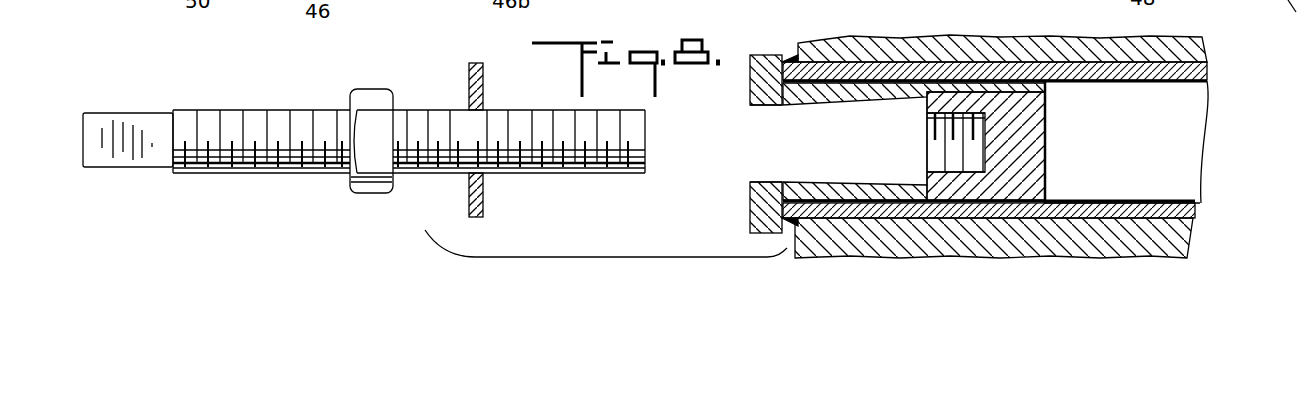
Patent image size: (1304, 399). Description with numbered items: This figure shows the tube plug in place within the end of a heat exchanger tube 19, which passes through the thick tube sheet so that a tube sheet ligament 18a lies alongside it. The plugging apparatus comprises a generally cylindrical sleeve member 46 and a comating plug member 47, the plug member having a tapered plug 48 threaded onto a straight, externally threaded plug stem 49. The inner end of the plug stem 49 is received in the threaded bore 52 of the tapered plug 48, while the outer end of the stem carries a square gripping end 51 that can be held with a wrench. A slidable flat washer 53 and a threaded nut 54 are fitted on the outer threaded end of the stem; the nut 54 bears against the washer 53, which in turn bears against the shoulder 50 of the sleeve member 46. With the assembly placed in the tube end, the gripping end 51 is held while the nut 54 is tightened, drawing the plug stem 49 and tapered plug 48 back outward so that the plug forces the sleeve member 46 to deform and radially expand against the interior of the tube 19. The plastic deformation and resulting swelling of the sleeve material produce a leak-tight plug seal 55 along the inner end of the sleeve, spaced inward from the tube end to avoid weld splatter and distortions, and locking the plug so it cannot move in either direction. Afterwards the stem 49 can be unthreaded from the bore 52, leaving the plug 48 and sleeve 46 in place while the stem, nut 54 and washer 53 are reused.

The tube sheet ligament 18a is at (887, 45).
The heat exchanger tube 19 is at (1207, 85).
The sleeve member 46 is at (792, 106).
The plug member 47 is at (278, 102).
The tapered plug 48 is at (1022, 135).
The plug stem 49 is at (567, 177).
The shoulder 50 is at (762, 53).
The square gripping end 51 is at (121, 125).
The threaded bore 52 is at (942, 167).
The flat washer 53 is at (469, 207).
The threaded nut 54 is at (361, 188).
The plug seal 55 is at (985, 202).